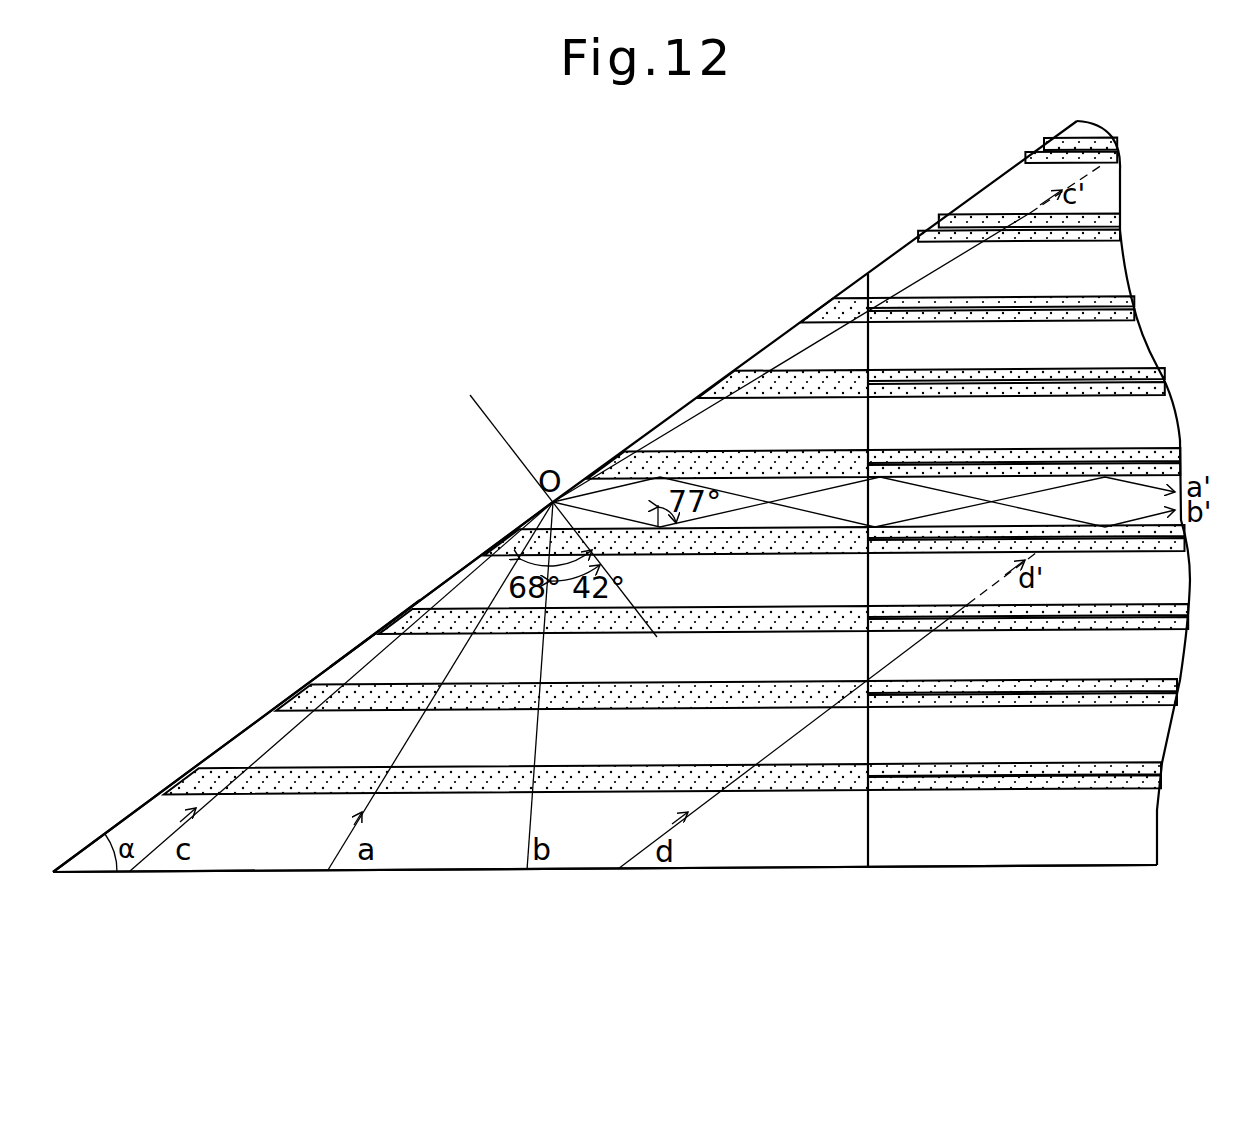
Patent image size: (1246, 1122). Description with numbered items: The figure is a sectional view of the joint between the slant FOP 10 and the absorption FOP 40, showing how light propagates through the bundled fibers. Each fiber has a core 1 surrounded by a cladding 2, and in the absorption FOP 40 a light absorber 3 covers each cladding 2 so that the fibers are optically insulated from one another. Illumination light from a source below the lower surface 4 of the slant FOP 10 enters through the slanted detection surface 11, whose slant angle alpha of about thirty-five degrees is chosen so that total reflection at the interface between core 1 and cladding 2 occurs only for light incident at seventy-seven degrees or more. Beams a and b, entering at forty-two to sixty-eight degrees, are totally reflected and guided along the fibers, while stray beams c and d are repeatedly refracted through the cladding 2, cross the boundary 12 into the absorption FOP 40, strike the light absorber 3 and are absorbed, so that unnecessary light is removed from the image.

The absorption FOP 40 is at (965, 185).
The core 1 is at (895, 257).
The cladding 2 is at (818, 318).
The light absorber 3 is at (1017, 230).
The slant FOP 10 is at (252, 700).
The detection surface 11 is at (368, 632).
The boundary line 12 is at (866, 756).
The lower surface 4 is at (472, 871).